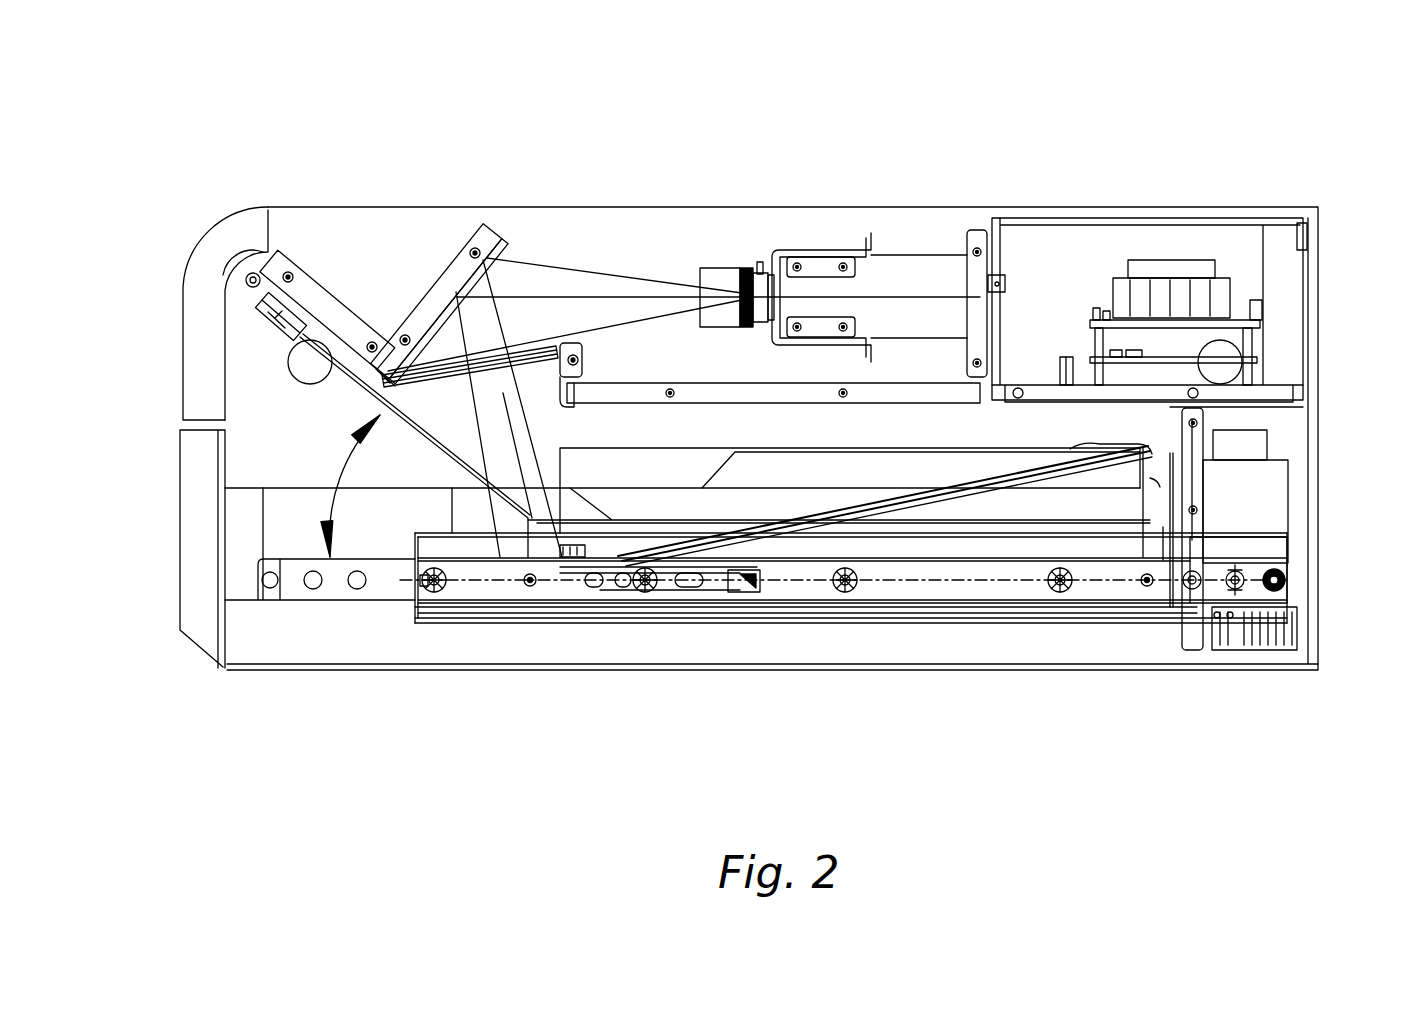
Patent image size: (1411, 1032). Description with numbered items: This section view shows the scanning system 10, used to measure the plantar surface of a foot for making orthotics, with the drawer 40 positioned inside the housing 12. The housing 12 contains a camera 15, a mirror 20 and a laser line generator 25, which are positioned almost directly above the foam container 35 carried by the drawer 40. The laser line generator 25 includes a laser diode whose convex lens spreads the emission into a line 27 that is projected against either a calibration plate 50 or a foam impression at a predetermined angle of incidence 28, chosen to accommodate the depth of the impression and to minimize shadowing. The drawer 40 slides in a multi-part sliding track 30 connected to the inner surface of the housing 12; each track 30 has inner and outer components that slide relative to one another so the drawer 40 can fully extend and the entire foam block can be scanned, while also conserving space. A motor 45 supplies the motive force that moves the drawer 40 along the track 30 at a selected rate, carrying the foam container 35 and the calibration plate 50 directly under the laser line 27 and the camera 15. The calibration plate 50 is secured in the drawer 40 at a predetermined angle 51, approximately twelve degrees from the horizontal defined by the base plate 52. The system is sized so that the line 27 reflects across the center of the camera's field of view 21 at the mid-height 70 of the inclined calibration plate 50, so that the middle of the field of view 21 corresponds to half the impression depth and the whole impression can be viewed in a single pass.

The scanning system 10 is at (284, 118).
The housing 12 is at (1205, 207).
The camera 15 is at (723, 268).
The mirror 20 is at (432, 303).
The field of view 21 is at (567, 287).
The laser line generator 25 is at (265, 207).
The laser line 27 is at (395, 388).
The angle of incidence 28 is at (325, 518).
The sliding track 30 is at (822, 598).
The foam container 35 is at (855, 470).
The drawer 40 is at (202, 545).
The motor 45 is at (1250, 500).
The calibration plate 50 is at (950, 480).
The predetermined angle 51 is at (870, 508).
The base plate 52 is at (1093, 560).
The mid-height 70 is at (855, 490).